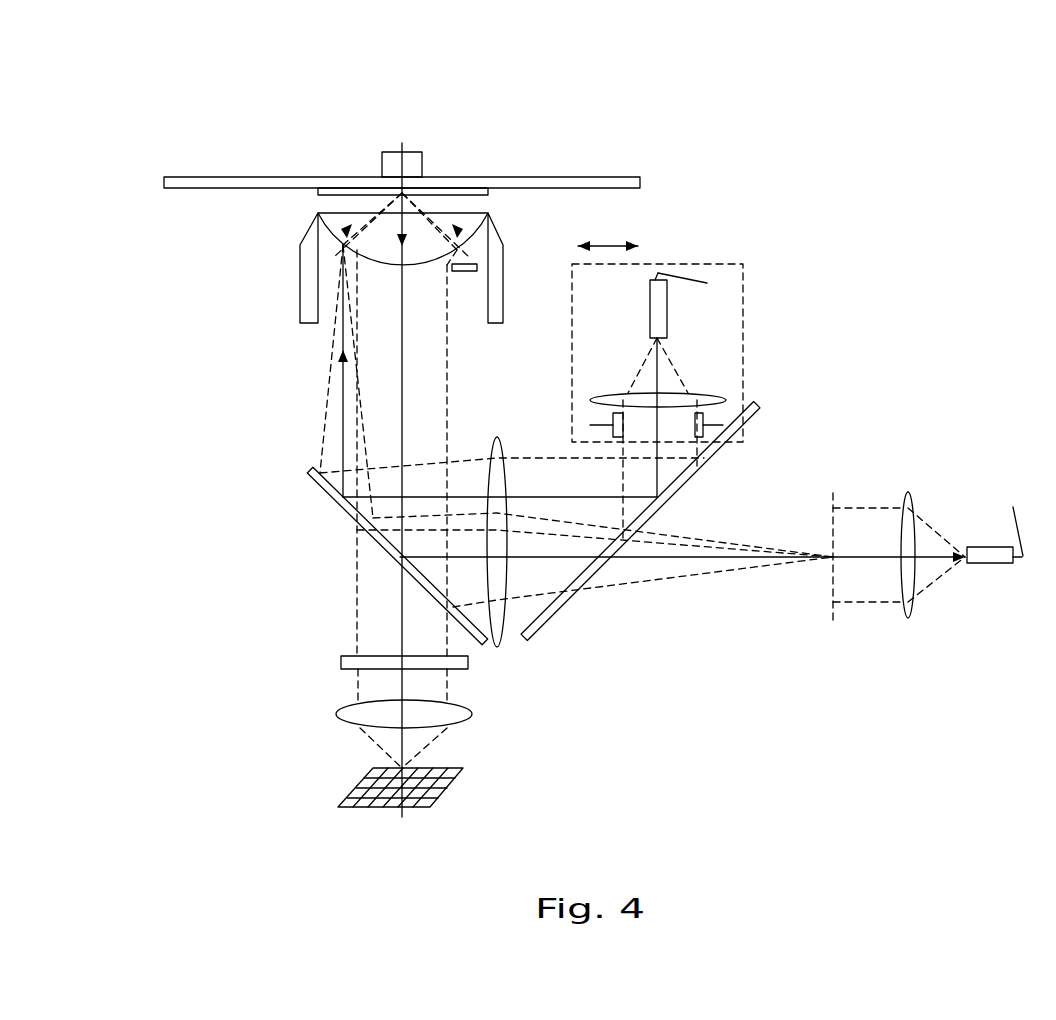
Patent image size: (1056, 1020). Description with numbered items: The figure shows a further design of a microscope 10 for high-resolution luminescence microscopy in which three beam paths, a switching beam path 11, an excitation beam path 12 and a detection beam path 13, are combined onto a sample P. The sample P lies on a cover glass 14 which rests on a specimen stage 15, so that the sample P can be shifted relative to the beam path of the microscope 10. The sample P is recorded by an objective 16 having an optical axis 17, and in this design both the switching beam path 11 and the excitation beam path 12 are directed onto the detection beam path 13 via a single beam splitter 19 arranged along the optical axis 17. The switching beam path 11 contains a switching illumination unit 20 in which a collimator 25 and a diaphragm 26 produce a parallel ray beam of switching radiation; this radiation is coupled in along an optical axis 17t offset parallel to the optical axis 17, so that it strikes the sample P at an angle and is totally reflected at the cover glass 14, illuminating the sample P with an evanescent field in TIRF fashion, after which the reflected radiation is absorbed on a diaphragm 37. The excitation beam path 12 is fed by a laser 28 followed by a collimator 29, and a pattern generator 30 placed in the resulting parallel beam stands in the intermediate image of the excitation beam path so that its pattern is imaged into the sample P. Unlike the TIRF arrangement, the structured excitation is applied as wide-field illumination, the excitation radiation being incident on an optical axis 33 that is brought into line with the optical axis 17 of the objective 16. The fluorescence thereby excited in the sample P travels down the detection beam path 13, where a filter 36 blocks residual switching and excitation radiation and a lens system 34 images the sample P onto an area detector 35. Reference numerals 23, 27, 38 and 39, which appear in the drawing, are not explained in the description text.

The microscope 10 is at (172, 387).
The switching beam path 11 is at (762, 250).
The excitation beam path 12 is at (721, 652).
The detection beam path 13 is at (215, 636).
The cover glass 14 is at (497, 177).
The specimen stage 15 is at (402, 143).
The objective 16 is at (327, 220).
The optical axis 17 is at (395, 596).
The optical axis 17t is at (333, 357).
The beam splitter 19 is at (337, 510).
The switching illumination unit 20 is at (688, 263).
The displacement direction 23 is at (620, 240).
The collimator 25 is at (730, 398).
The diaphragm 26 is at (593, 425).
The light source 27 is at (657, 268).
The laser 28 is at (990, 565).
The collimator 29 is at (905, 612).
The pattern generator 30 is at (830, 593).
The optical axis 33 is at (635, 557).
The lens system 34 is at (473, 714).
The area detector 35 is at (445, 790).
The filter 36 is at (341, 662).
The diaphragm 37 is at (458, 273).
The second beam splitter 38 is at (685, 487).
The relay lens 39 is at (507, 652).
The sample P is at (400, 175).